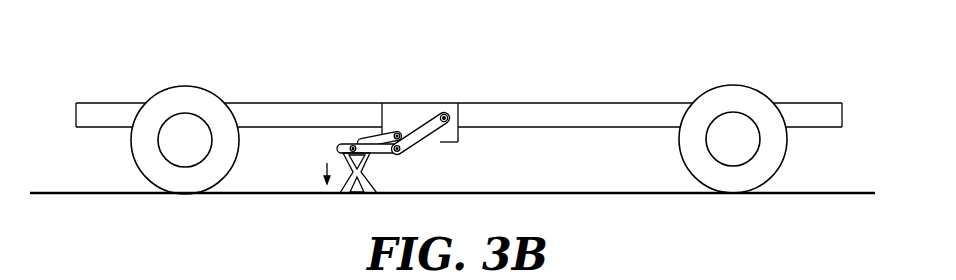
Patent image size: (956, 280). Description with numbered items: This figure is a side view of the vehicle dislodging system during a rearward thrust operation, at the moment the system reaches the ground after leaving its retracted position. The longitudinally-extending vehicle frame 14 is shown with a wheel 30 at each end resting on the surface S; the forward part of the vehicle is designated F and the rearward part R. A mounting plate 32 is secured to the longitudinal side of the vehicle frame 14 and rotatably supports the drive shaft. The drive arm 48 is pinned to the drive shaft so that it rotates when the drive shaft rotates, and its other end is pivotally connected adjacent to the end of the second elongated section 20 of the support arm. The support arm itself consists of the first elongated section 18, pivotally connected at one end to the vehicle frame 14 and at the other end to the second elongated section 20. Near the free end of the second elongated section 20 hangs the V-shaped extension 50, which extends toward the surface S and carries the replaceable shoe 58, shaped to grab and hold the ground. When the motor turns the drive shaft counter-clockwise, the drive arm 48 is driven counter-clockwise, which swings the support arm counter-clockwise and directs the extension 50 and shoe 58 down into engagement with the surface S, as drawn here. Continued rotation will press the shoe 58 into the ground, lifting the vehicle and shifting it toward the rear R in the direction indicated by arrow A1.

The vehicle frame 14 is at (631, 107).
The first elongated section 18 is at (450, 125).
The second elongated section 20 is at (383, 151).
The wheel 30 is at (185, 95).
The mounting plate 32 is at (453, 107).
The drive arm 48 is at (379, 140).
The extension 50 is at (347, 157).
The shoe 58 is at (366, 187).
The surface S is at (671, 194).
The rearward part R is at (90, 44).
The forward part F is at (823, 44).
The arrow A1 is at (295, 67).